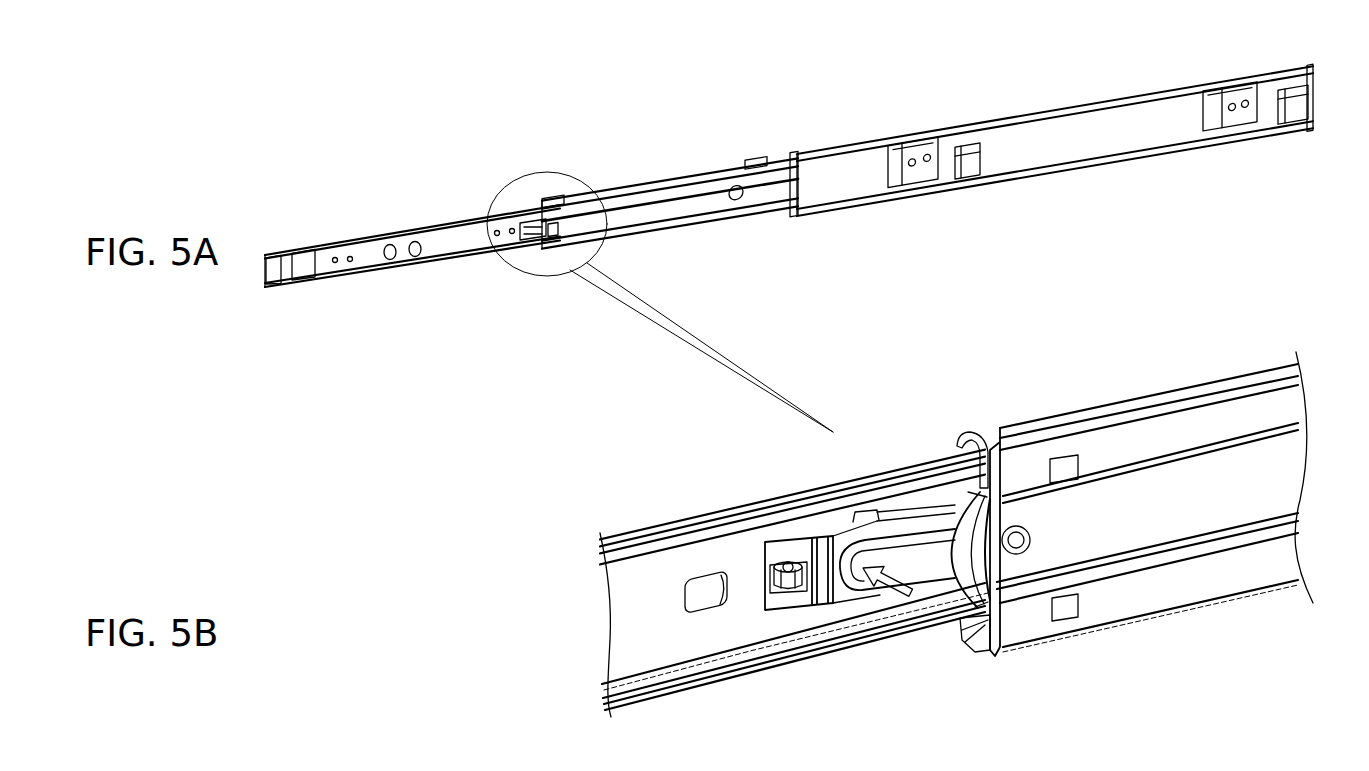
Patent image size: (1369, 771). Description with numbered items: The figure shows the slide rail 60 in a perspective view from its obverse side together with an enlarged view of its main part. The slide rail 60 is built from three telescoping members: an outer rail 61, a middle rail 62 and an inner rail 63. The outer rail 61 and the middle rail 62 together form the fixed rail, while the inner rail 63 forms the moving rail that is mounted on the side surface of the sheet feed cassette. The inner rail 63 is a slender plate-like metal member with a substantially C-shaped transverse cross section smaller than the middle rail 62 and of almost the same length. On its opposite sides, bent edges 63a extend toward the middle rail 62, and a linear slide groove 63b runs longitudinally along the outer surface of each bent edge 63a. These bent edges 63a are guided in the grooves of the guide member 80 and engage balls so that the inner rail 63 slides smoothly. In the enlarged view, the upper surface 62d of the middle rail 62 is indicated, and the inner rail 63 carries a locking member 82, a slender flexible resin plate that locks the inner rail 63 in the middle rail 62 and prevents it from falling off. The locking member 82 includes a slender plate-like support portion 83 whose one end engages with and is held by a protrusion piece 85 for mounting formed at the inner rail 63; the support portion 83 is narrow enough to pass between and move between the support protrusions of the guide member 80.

In FIG. 5A, the slide rail 60 is at (907, 118).
In FIG. 5A, the outer rail 61 is at (1034, 106).
In FIG. 5A, the middle rail 62 is at (675, 170).
In FIG. 5B, the middle rail 62 is at (1170, 432).
In FIG. 5B, the upper surface of intermediate rail 62d is at (1127, 408).
In FIG. 5A, the inner rail 63 is at (450, 214).
In FIG. 5B, the inner rail 63 is at (642, 572).
In FIG. 5A, the bent edges 63a is at (412, 246).
In FIG. 5B, the bent edges 63a is at (708, 529).
In FIG. 5B, the slide groove 63b is at (912, 467).
In FIG. 5B, the guide member 80 is at (969, 641).
In FIG. 5A, the locking member 82 is at (539, 229).
In FIG. 5B, the locking member 82 is at (847, 612).
In FIG. 5B, the support portion 83 is at (869, 594).
In FIG. 5B, the protrusion piece 85 is at (803, 566).